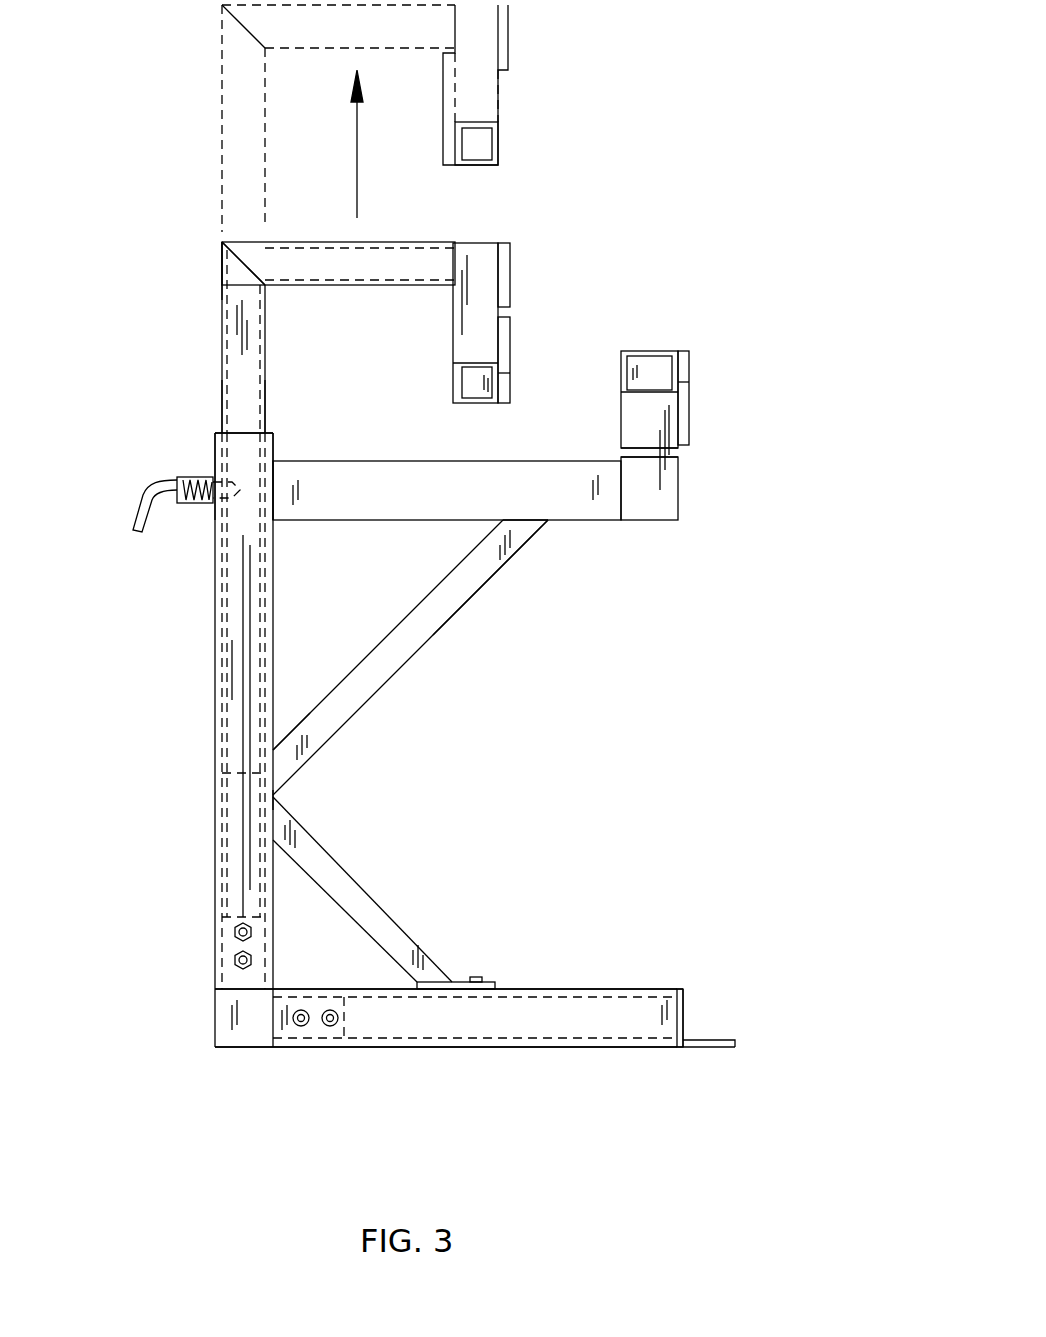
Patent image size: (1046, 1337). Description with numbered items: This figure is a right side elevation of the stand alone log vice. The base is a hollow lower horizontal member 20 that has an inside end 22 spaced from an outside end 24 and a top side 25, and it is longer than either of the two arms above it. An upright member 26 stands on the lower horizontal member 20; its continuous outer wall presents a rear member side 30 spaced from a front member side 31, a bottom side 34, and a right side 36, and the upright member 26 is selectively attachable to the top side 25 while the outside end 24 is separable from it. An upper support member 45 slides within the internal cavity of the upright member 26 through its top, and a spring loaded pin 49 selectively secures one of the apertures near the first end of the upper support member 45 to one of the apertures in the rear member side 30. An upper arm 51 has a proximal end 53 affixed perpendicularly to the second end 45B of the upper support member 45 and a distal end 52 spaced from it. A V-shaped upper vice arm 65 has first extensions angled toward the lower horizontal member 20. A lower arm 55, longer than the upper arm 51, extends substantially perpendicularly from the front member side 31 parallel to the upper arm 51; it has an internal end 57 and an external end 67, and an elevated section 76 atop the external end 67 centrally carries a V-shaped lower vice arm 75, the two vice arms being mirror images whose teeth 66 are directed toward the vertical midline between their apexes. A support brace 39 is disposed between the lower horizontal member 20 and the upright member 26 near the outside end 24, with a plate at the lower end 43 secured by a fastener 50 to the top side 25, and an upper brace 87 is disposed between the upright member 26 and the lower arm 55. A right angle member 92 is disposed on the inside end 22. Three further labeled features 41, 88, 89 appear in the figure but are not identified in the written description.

The lower horizontal member 20 is at (525, 1040).
The inside end 22 is at (680, 1005).
The outside end 24 is at (260, 1045).
The top side 25 is at (555, 988).
The upright member 26 is at (215, 602).
The rear member side 30 is at (215, 817).
The front member side 31 is at (275, 700).
The bottom side 34 is at (478, 1048).
The right side 36 is at (237, 857).
The support brace 39 is at (362, 885).
The brace junction 41 is at (272, 802).
The lower end 43 is at (437, 990).
The upper support member 45 is at (235, 293).
The second end 45B is at (247, 257).
The spring loaded pin 49 is at (145, 490).
The fastener 50 is at (233, 932).
The upper arm 51 is at (395, 240).
The distal end 52 is at (458, 258).
The proximal end 53 is at (245, 265).
The lower arm 55 is at (355, 460).
The internal end 57 is at (272, 508).
The V-shaped upper vice arm 65 is at (505, 243).
The teeth 66 is at (508, 350).
The external end 67 is at (680, 515).
The V-shaped lower vice arm 75 is at (620, 400).
The elevated section 76 is at (680, 458).
The upper brace 87 is at (433, 632).
The brace attachment 88 is at (272, 770).
The brace upper end 89 is at (548, 520).
The right angle member 92 is at (735, 1044).